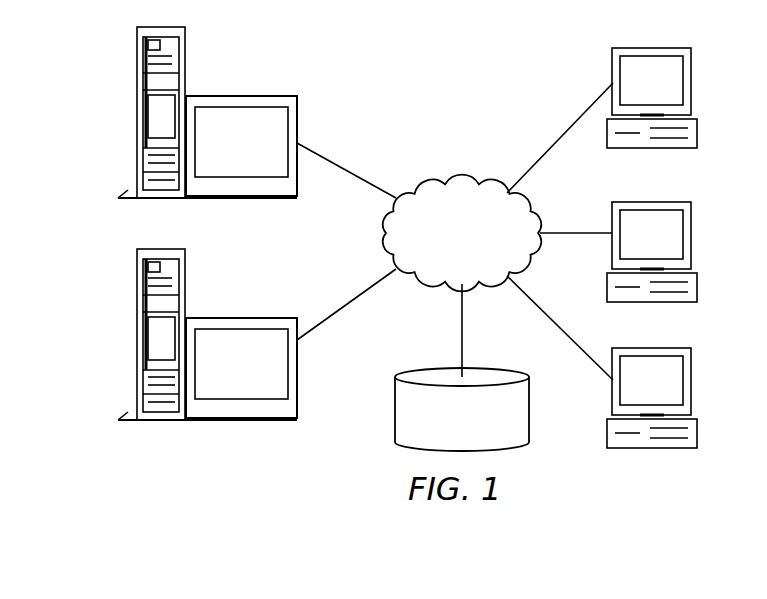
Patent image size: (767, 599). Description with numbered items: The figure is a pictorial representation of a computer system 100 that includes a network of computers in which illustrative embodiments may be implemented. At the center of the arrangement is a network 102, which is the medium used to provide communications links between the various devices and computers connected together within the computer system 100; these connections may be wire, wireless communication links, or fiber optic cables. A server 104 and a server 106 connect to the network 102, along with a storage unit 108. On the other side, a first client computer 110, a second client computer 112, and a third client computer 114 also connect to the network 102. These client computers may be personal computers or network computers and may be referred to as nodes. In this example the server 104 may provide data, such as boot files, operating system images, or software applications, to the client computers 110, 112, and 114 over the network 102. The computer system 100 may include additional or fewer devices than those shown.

The computer system 100 is at (517, 70).
The network 102 is at (433, 181).
The server 104 is at (136, 113).
The server 106 is at (136, 335).
The storage unit 108 is at (393, 422).
The first client computer 110 is at (696, 83).
The second client computer 112 is at (696, 234).
The third client computer 114 is at (696, 383).